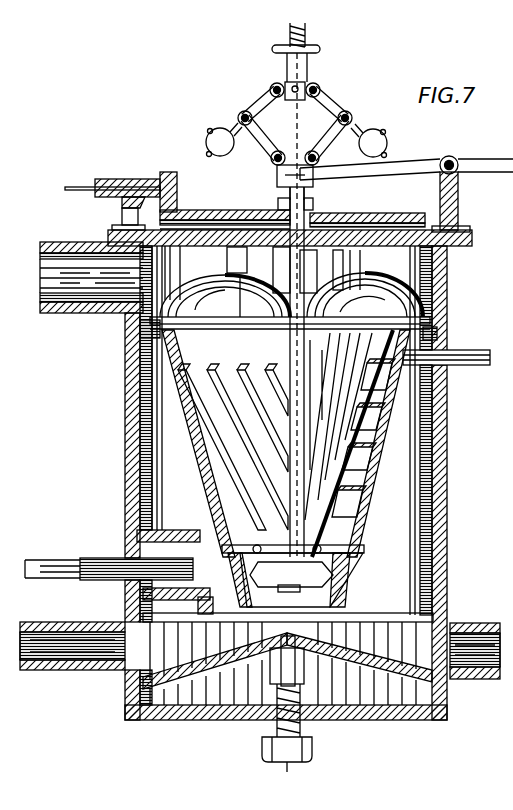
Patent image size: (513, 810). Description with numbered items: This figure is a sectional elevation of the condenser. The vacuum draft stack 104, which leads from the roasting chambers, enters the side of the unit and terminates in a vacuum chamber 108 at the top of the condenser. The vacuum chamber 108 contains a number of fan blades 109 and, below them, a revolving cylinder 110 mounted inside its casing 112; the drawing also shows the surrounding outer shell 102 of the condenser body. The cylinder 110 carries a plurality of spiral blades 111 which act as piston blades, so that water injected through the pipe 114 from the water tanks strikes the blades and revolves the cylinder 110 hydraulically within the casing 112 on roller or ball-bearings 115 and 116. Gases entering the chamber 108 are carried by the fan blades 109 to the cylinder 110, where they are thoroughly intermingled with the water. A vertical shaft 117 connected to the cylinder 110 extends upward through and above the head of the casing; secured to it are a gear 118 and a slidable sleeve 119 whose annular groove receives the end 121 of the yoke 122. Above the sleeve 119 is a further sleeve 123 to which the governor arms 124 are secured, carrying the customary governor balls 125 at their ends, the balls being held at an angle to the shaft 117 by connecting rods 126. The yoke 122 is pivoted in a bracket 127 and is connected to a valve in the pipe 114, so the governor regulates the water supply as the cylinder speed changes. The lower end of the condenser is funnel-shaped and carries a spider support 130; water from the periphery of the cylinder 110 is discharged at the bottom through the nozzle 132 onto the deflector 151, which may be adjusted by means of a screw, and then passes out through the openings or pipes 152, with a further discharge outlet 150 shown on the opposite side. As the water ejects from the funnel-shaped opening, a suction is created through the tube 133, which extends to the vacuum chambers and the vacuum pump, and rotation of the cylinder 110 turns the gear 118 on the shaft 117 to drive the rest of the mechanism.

The casing 102 is at (236, 475).
The vacuum draft stack 104 is at (70, 284).
The vacuum chamber 108 is at (291, 286).
The fan blades 109 is at (291, 298).
The revolving cylinder 110 is at (286, 443).
The spiral blades 111 is at (258, 362).
The casing 112 is at (166, 462).
The pipe 114 is at (470, 367).
The roller or ball-bearing 115 is at (150, 333).
The roller or ball-bearing 116 is at (218, 548).
The vertical shaft 117 is at (305, 190).
The gear 118 is at (356, 224).
The slidable sleeve 119 is at (277, 177).
The end of the yoke 121 is at (318, 165).
The yoke 122 is at (474, 170).
The sleeve 123 is at (318, 86).
The governor arms 124 is at (257, 105).
The governor balls 125 is at (206, 141).
The connecting rods 126 is at (268, 147).
The bracket 127 is at (458, 191).
The spider support 130 is at (323, 589).
The nozzle 132 is at (373, 617).
The tube 133 is at (110, 578).
The right discharge pipe 150 is at (488, 651).
The deflector 151 is at (287, 702).
The pipes 152 is at (70, 649).